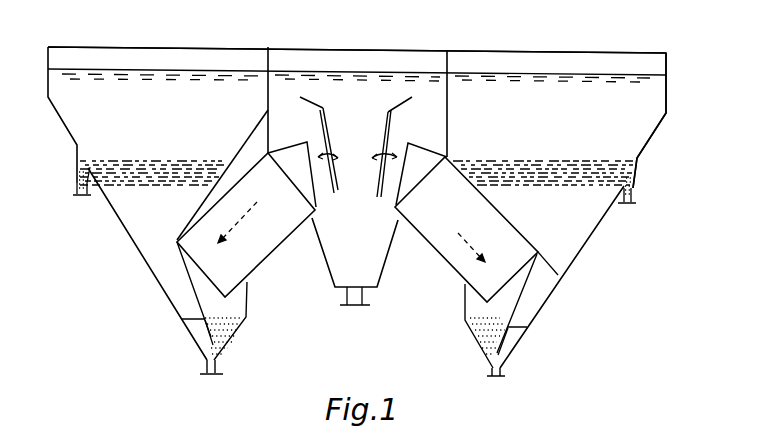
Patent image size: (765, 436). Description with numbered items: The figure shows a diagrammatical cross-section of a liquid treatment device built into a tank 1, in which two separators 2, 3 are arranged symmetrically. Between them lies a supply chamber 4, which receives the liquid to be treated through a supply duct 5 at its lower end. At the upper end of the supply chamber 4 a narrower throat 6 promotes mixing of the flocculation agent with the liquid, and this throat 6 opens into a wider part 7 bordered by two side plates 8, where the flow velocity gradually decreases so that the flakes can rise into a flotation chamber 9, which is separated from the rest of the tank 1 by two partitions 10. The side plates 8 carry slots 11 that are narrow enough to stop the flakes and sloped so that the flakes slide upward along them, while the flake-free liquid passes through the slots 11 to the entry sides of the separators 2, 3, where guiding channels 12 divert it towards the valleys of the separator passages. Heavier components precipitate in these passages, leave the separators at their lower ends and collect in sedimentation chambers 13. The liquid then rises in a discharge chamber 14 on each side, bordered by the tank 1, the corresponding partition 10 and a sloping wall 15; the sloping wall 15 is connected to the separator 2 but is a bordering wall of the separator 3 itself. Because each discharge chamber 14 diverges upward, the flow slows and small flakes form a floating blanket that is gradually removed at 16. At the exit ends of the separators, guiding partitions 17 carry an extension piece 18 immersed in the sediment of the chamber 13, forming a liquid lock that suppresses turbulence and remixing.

The tank 1 is at (127, 233).
The separator 2 is at (253, 245).
The separator 3 is at (459, 222).
The supply chamber 4 is at (355, 252).
The supply duct 5 is at (355, 307).
The throat 6 is at (362, 206).
The wider part 7 is at (361, 124).
The side plate 8 is at (326, 106).
The flotation chamber 9 is at (368, 52).
The partition 10 is at (265, 47).
The slot 11 is at (323, 118).
The guiding channel 12 is at (312, 170).
The sedimentation chamber 13 is at (233, 322).
The discharge chamber 14 is at (568, 236).
The sloping wall 15 is at (231, 144).
The blanket removal point 16 is at (642, 190).
The guiding partition 17 is at (202, 290).
The extension piece 18 is at (207, 340).